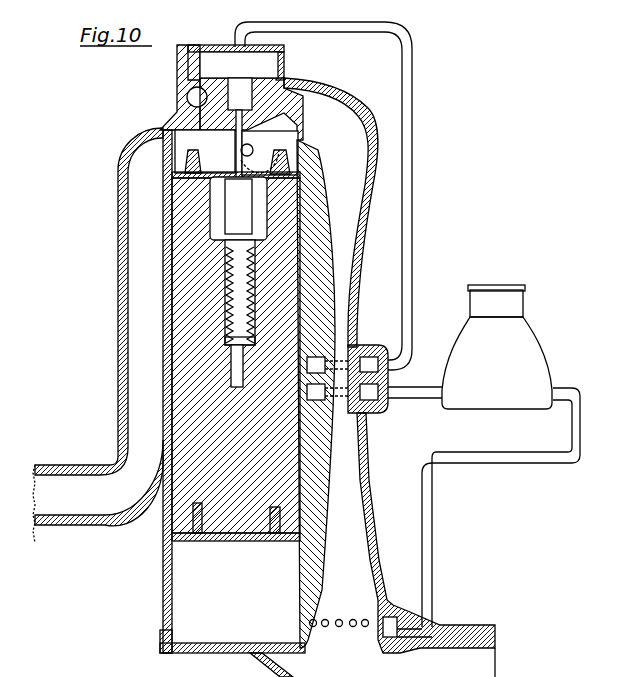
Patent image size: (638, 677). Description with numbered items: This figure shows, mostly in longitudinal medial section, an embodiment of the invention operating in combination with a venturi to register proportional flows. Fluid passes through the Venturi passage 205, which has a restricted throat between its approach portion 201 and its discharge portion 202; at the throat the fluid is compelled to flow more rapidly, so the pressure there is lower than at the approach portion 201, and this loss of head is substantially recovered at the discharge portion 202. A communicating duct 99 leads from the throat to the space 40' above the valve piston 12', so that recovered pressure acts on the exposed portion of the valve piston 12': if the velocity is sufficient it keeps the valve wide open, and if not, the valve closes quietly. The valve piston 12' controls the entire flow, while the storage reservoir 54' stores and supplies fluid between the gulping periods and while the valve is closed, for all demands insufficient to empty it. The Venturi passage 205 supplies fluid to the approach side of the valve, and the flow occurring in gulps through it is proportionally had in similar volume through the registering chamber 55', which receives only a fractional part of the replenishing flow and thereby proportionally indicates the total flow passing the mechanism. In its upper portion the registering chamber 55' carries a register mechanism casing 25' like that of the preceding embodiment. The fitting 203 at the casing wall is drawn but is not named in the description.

The space above the valve piston 40' is at (235, 52).
The valve piston 12' is at (240, 128).
The storage reservoir 54' is at (236, 152).
The discharge end of the venturi passage 202 is at (345, 125).
The communicating duct 99 is at (405, 203).
The register mechanism casing 25' is at (496, 301).
The register mechanism 55' is at (484, 472).
The venturi passage 205 is at (366, 503).
The approach end of the venturi passage 201 is at (338, 611).
The connection fitting 203 is at (339, 388).